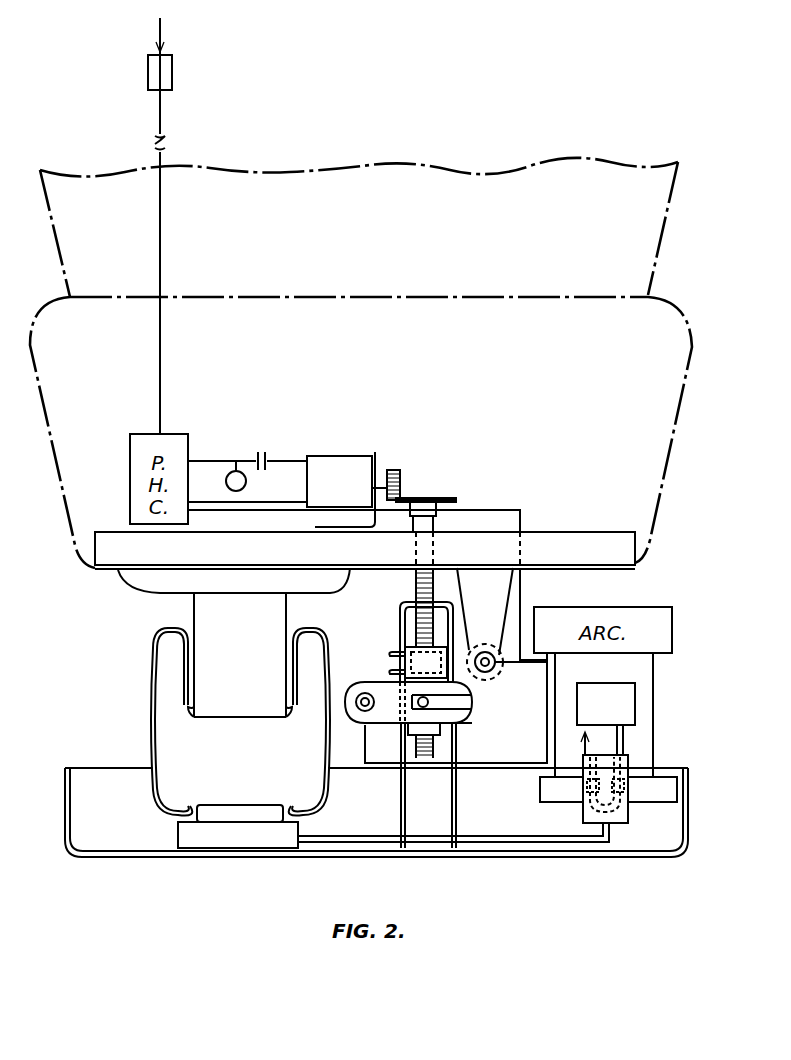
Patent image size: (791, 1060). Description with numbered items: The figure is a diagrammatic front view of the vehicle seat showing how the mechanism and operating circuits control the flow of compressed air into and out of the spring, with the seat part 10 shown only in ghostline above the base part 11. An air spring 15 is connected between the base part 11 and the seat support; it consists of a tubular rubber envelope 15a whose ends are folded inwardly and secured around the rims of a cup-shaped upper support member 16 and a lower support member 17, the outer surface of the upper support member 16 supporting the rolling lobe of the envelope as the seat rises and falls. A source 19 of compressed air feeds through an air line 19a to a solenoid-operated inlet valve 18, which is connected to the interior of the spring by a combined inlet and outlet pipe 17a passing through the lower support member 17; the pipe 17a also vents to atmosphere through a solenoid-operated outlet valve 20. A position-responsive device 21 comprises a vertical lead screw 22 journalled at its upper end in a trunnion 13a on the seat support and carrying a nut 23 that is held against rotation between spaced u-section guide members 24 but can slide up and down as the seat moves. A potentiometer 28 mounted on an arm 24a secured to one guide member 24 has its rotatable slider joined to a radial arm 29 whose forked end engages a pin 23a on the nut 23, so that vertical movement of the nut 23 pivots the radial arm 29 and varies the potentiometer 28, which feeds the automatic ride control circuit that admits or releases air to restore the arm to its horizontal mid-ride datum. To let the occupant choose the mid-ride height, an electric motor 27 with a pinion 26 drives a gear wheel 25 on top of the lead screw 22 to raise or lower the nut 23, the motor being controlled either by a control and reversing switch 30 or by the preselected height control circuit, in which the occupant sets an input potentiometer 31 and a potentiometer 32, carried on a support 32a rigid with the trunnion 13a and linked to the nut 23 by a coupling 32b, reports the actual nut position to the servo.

The seat part 10 is at (339, 166).
The base part 11 is at (331, 868).
The trunnion 13a is at (544, 536).
The air spring 15 is at (201, 722).
The tubular rubber envelope 15a is at (155, 659).
The upper support member 16 is at (233, 684).
The lower support member 17 is at (240, 808).
The combined inlet and outlet pipe 17a is at (343, 836).
The solenoid-operated inlet valve 18 is at (651, 793).
The source of compressed air 19 is at (628, 704).
The air line 19a is at (625, 748).
The solenoid-operated outlet valve 20 is at (553, 792).
The position-responsive device 21 is at (484, 693).
The lead screw 22 is at (416, 590).
The nut 23 is at (405, 667).
The pin 23a is at (436, 704).
The u-section guide members 24 is at (456, 787).
The arm 24a is at (392, 728).
The gear wheel 25 is at (456, 498).
The pinion 26 is at (402, 481).
The electric motor 27 is at (311, 480).
The potentiometer 28 is at (348, 713).
The radial arm 29 is at (455, 718).
The control and reversing switch 30 is at (236, 470).
The input potentiometer 31 is at (163, 72).
The potentiometer 32 is at (503, 665).
The support 32a is at (490, 597).
The coupling 32b is at (398, 645).